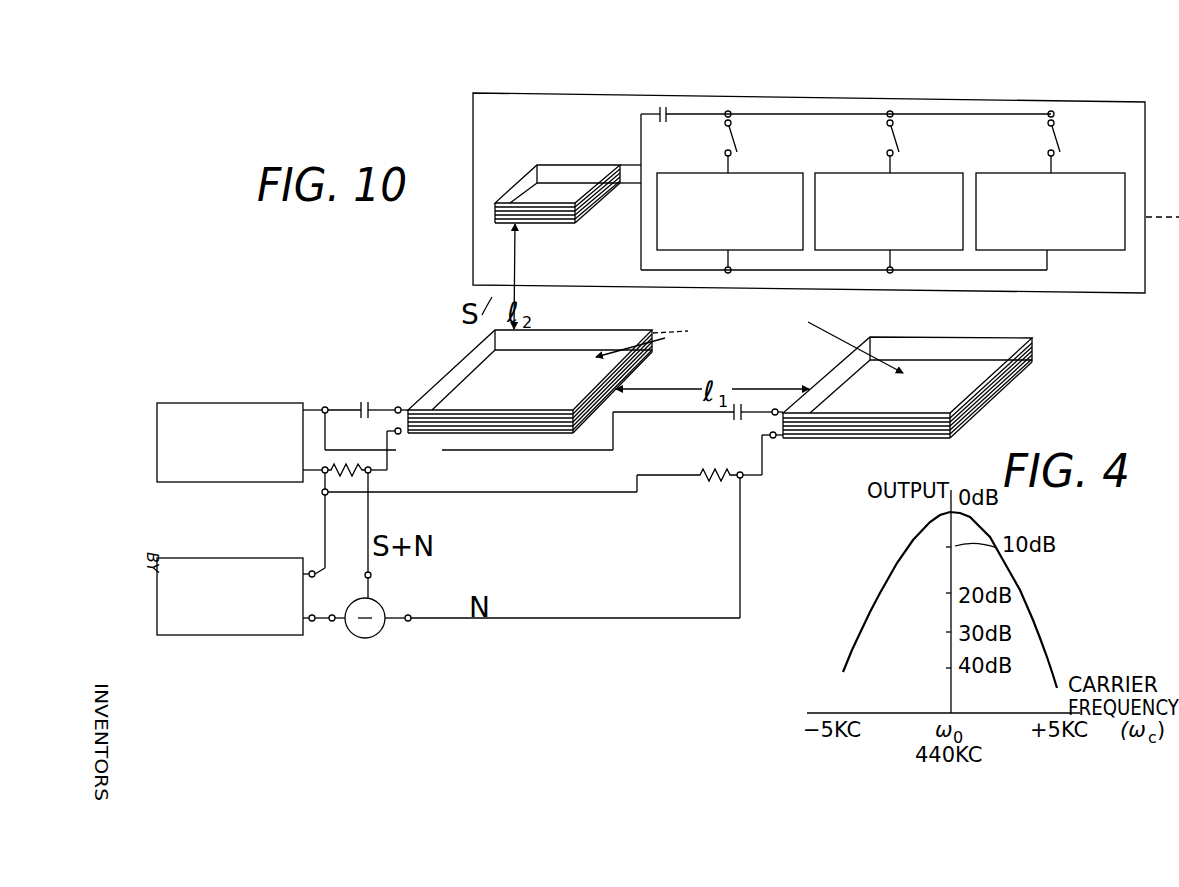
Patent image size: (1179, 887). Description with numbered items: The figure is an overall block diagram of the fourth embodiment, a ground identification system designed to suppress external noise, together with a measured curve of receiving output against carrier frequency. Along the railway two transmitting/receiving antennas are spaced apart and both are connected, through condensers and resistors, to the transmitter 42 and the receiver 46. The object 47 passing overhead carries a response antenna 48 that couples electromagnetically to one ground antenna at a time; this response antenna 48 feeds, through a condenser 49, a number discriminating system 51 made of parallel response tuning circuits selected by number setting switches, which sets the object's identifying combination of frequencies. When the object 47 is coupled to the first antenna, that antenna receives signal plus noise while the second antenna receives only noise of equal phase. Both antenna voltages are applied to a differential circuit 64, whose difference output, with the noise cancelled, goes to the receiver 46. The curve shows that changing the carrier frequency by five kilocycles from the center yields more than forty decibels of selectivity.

The object 47 is at (968, 106).
The response antenna 48 is at (564, 223).
The condenser 49 is at (680, 90).
The number discriminating system 51 is at (787, 92).
The transmitter 42 is at (229, 403).
The receiver 46 is at (220, 635).
The differential circuit 64 is at (378, 633).